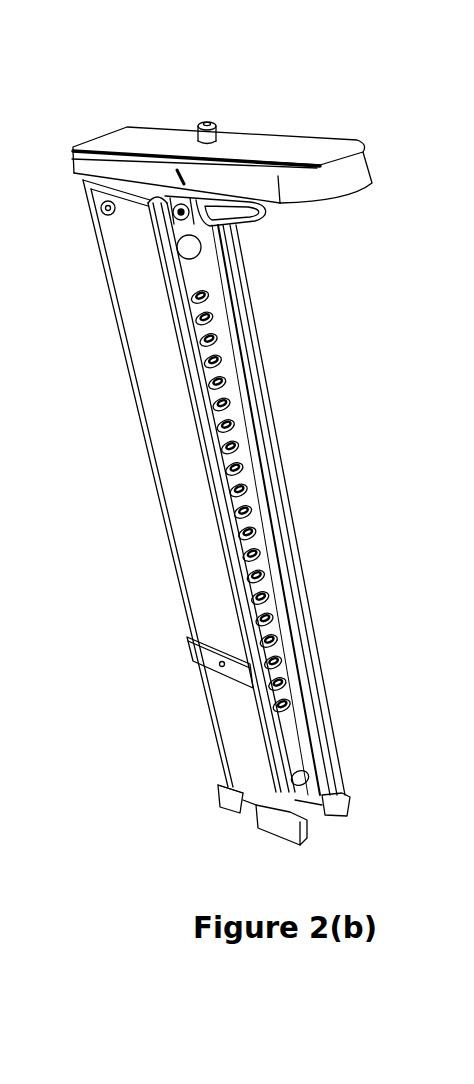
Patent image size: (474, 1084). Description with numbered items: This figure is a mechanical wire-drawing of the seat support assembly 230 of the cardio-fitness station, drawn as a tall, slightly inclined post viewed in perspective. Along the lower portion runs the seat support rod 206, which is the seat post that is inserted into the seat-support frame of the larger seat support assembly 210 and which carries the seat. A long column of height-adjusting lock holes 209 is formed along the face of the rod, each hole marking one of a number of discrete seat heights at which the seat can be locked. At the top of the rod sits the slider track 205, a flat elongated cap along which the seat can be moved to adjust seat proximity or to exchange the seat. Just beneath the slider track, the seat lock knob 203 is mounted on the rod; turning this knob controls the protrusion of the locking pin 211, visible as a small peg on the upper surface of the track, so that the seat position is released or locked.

The seat lock knob 203 is at (247, 225).
The slider track 205 is at (320, 150).
The seat support rod 206 is at (195, 552).
The height-adjusting lock holes 209 is at (227, 392).
The seat support assembly 210 is at (175, 826).
The locking pin 211 is at (215, 122).
The seat support assembly 230 is at (392, 705).